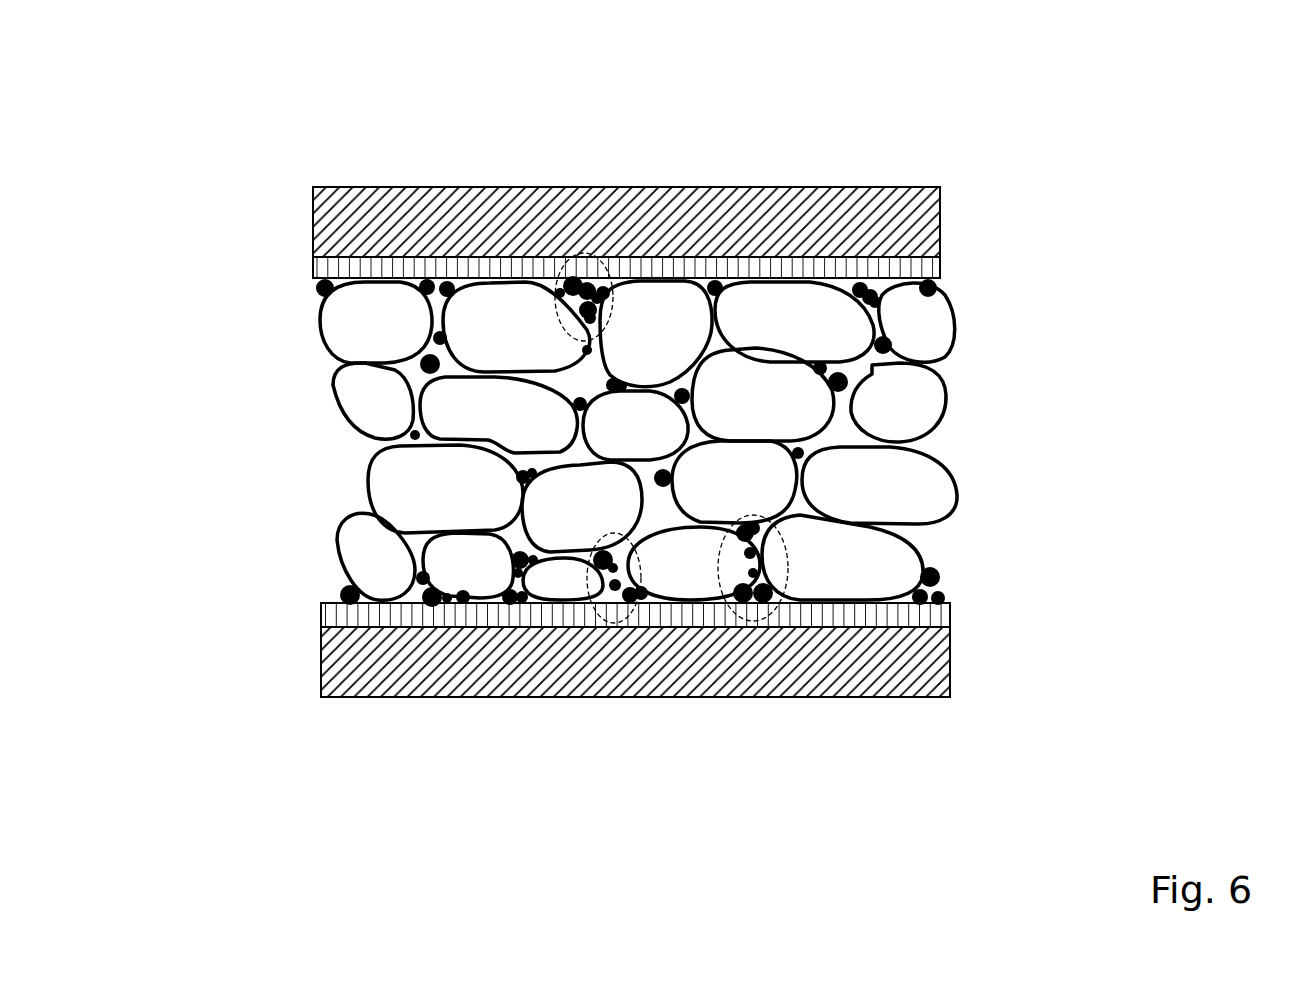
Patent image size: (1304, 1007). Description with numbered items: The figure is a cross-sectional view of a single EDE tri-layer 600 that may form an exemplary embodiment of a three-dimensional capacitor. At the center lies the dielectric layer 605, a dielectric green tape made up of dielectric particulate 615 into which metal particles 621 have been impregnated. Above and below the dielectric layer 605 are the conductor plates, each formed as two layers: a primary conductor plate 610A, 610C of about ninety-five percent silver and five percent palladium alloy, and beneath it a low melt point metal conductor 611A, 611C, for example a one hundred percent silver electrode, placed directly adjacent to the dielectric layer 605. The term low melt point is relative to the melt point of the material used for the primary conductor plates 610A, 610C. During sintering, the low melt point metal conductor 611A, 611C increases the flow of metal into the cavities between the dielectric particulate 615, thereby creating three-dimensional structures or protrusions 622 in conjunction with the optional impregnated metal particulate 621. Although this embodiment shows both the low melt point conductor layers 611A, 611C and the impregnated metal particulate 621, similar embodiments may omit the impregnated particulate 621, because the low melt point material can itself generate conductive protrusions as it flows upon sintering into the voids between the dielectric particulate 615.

The EDE tri-layer 600 is at (1123, 49).
The dielectric layer 605 is at (297, 282).
The primary conductor plate 610A is at (923, 228).
The low melt point metal conductor 611A is at (935, 269).
The primary conductor plate 610C is at (940, 650).
The low melt point metal conductor 611C is at (940, 615).
The dielectric particulate 615 is at (917, 492).
The impregnated metal particulate 621 is at (933, 287).
The protrusions 622 is at (584, 258).